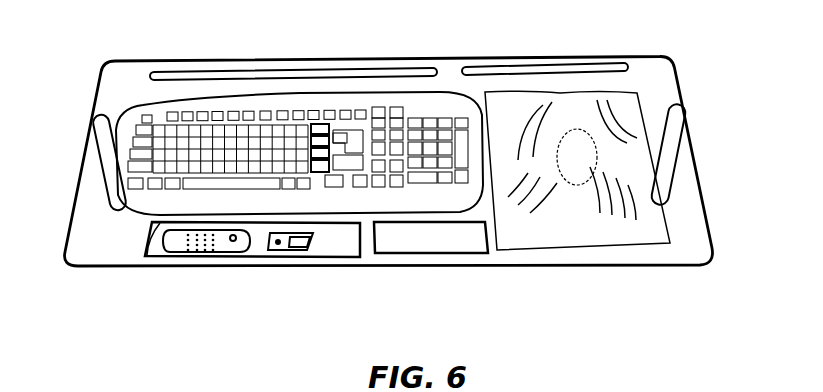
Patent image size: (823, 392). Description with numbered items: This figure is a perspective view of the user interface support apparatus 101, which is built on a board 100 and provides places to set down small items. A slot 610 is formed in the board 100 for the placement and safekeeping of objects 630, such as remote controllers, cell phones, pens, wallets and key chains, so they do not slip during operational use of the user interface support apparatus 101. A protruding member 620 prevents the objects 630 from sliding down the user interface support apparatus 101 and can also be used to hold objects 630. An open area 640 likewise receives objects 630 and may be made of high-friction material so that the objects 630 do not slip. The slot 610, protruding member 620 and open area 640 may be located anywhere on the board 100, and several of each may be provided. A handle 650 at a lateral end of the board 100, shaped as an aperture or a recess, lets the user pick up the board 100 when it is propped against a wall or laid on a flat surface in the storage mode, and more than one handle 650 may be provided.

The board 100 is at (128, 97).
The user interface support apparatus 101 is at (249, 217).
The slot 610 is at (348, 240).
The protruding member 620 is at (477, 72).
The objects 630 is at (220, 250).
The open area 640 is at (425, 238).
The handle 650 is at (670, 158).